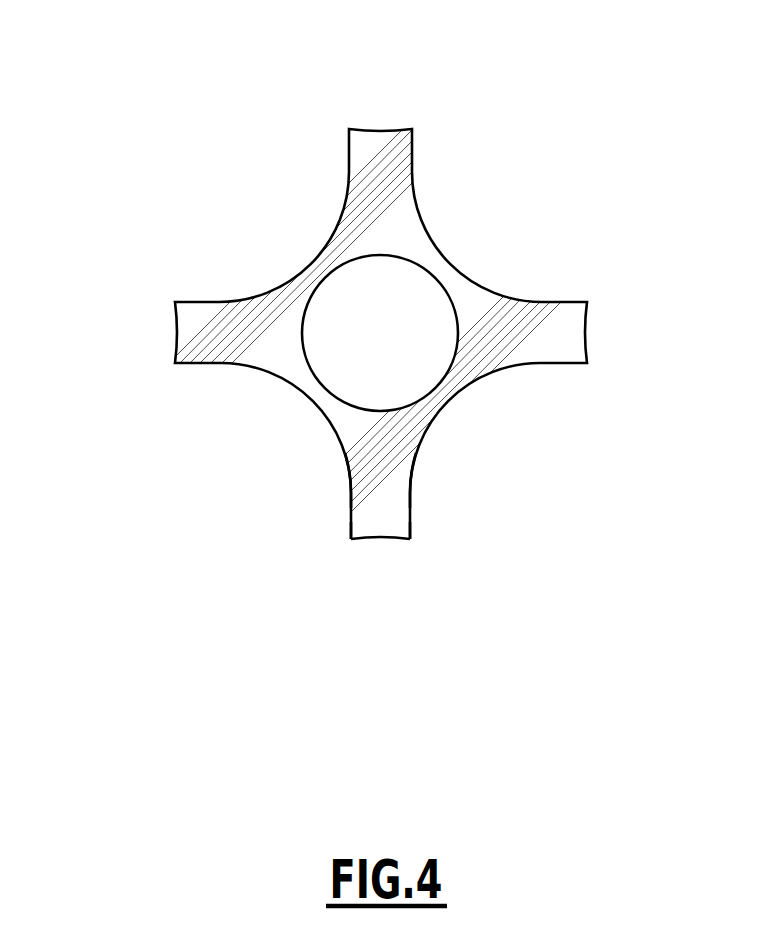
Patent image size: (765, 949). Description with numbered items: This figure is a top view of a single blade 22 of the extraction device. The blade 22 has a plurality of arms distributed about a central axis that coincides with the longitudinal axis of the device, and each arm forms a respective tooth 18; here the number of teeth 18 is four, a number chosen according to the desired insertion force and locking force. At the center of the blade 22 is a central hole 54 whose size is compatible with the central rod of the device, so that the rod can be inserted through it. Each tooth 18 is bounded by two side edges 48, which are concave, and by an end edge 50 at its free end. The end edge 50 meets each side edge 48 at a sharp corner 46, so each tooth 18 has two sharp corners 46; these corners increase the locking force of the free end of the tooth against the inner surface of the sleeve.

The tooth 18 is at (380, 110).
The blade 22 is at (370, 339).
The central hole 54 is at (343, 303).
The sharp corner 46 is at (351, 541).
The side edge 48 is at (351, 503).
The end edge 50 is at (378, 544).